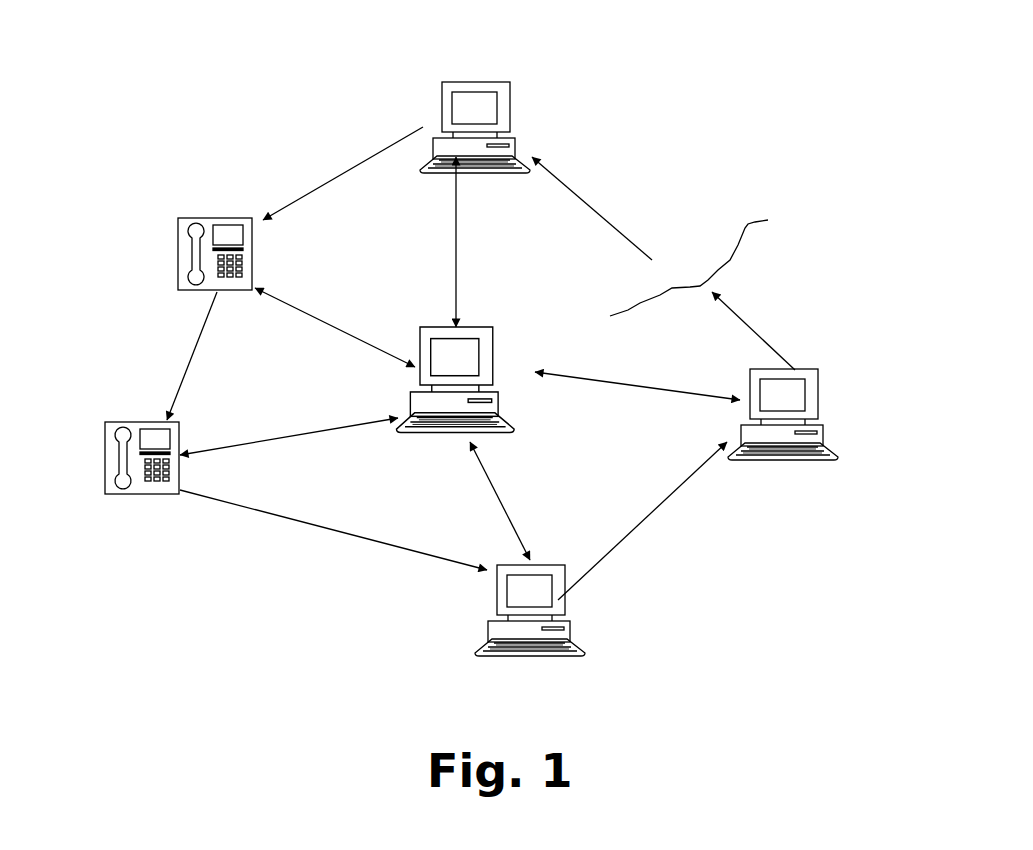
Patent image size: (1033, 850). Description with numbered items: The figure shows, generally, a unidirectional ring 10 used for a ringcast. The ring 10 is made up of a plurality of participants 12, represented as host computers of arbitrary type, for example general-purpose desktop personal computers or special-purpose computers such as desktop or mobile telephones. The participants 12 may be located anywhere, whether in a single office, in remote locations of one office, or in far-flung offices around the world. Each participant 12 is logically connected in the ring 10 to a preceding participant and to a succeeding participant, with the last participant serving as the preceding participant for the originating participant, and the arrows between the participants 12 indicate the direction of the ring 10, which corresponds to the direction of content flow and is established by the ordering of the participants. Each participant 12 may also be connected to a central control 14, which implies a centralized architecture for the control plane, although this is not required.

The unidirectional ring 10 is at (274, 582).
The participant 12 is at (503, 95).
The central control 14 is at (490, 327).